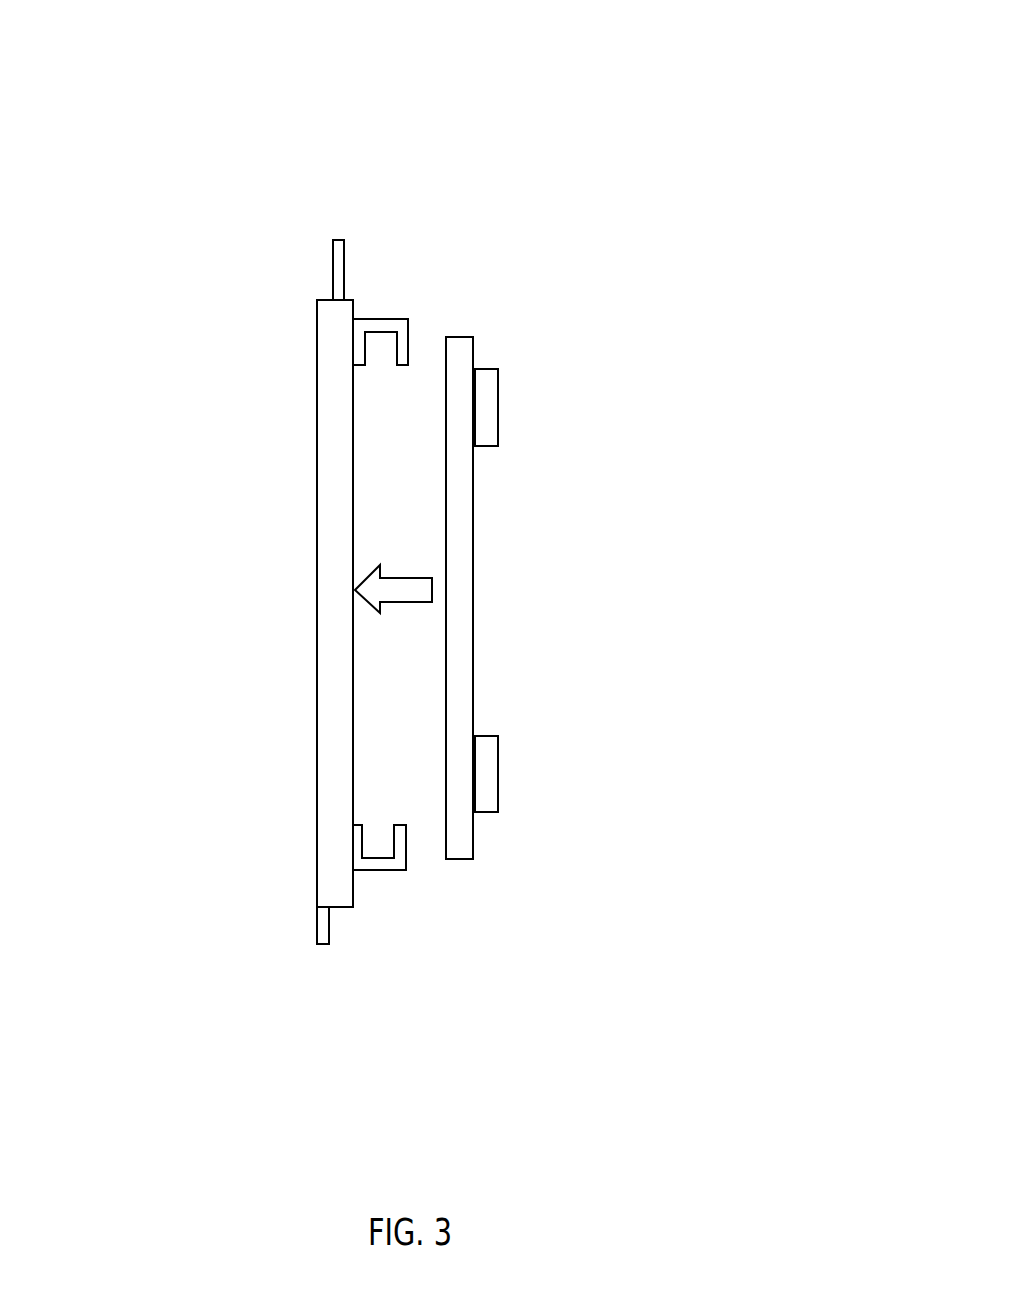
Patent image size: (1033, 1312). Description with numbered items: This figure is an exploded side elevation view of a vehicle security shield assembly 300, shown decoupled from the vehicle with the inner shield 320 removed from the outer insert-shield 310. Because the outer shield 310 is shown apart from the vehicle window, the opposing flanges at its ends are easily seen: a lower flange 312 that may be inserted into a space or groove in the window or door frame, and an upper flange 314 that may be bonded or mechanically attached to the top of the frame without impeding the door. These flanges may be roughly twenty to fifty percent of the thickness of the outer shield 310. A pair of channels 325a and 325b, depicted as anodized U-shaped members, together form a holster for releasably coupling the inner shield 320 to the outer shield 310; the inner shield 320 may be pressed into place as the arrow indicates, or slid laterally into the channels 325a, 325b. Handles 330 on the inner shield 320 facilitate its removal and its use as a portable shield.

The vehicle security shield assembly 300 is at (624, 92).
The outer insert-shield 310 is at (338, 458).
The lower flange 312 is at (329, 944).
The upper flange 314 is at (317, 252).
The inner shield 320 is at (457, 545).
The channel 325a is at (406, 870).
The channel 325b is at (378, 318).
The handle 330 is at (498, 411).